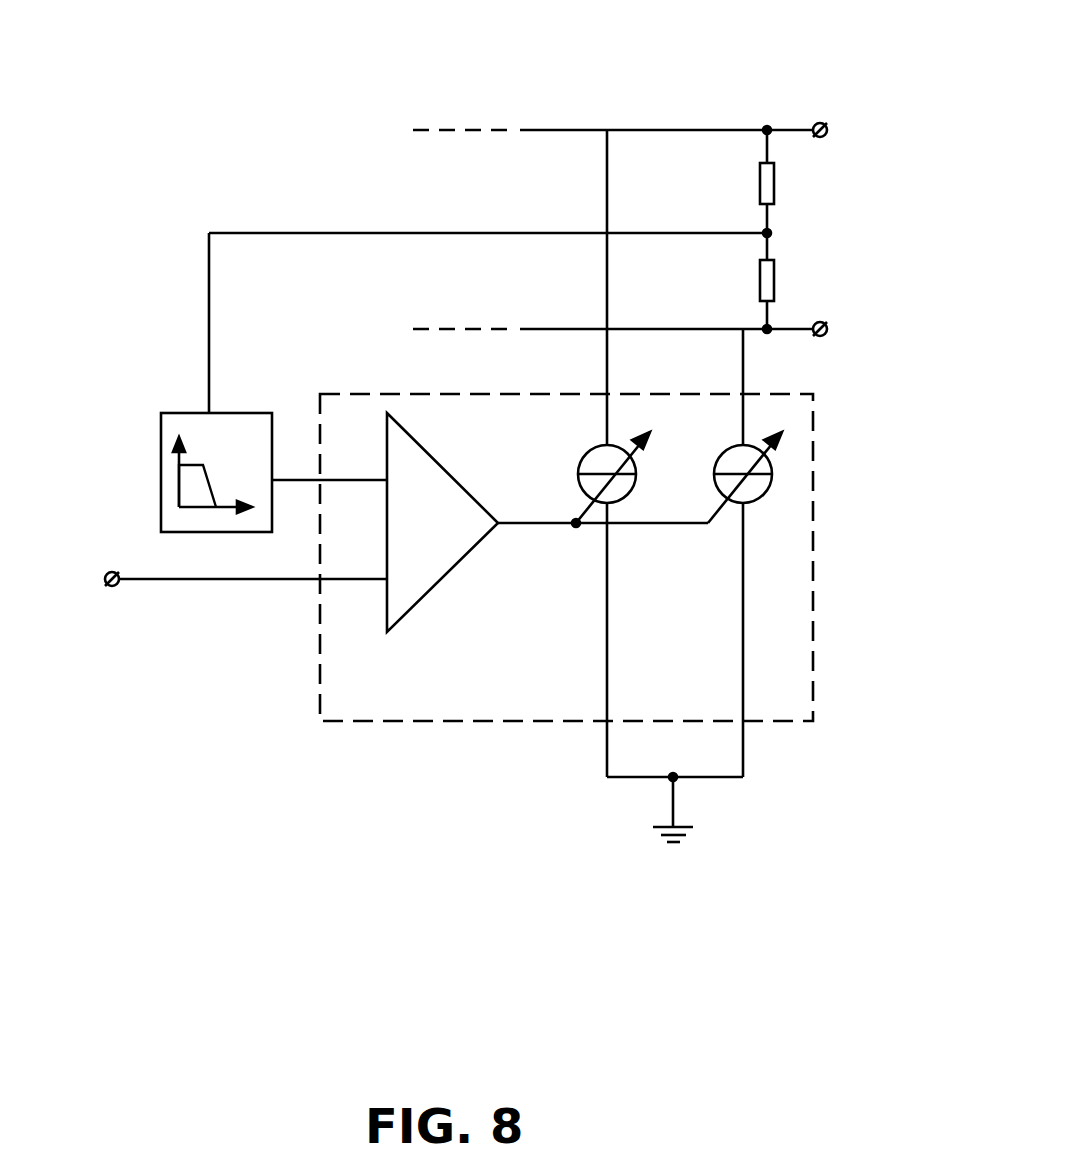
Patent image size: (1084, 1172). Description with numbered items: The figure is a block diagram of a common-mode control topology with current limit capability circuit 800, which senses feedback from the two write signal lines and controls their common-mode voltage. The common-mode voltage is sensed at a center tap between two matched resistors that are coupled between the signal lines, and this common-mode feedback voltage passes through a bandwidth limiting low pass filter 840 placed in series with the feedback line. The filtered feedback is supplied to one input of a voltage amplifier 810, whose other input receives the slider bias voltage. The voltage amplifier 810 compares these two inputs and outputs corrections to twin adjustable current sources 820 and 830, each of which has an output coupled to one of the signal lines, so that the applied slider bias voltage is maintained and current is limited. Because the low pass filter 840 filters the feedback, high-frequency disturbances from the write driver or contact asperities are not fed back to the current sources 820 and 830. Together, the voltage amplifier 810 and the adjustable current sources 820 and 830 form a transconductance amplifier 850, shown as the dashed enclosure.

The common-mode control topology with current limit capability circuit 800 is at (427, 36).
The voltage amplifier 810 is at (443, 522).
The adjustable current source 820 is at (590, 476).
The adjustable current source 830 is at (727, 476).
The low pass filter 840 is at (223, 453).
The transconductance amplifier 850 is at (435, 721).